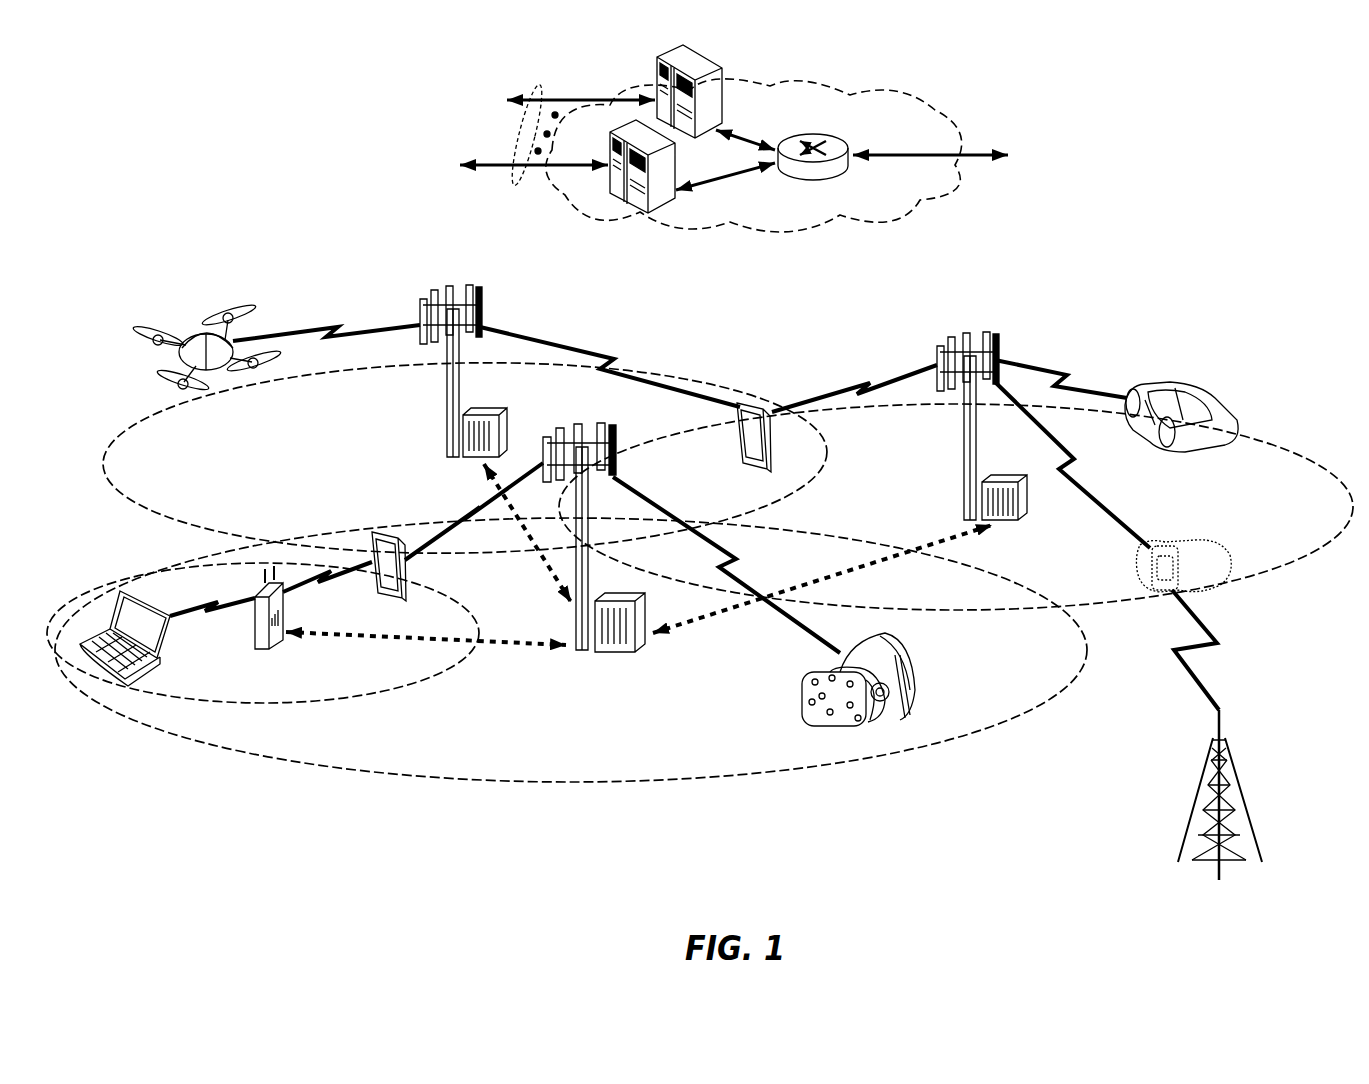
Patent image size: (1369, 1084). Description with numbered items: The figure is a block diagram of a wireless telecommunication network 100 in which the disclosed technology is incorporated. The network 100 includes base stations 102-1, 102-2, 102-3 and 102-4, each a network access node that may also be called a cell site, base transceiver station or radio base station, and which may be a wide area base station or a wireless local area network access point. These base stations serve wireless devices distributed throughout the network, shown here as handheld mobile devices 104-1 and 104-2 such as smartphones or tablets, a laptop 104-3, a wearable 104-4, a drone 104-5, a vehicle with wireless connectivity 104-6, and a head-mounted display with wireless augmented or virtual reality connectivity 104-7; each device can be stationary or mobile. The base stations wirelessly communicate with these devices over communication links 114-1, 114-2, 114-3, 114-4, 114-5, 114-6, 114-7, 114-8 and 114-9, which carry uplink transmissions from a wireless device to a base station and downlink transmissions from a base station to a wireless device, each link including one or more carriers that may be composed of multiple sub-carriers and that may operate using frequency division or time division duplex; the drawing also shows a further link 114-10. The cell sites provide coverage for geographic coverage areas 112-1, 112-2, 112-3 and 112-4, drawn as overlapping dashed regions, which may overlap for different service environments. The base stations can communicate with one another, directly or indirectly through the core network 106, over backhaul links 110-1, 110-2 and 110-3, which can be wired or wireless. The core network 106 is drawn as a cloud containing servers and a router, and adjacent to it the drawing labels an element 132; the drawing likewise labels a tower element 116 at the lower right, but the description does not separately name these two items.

The wireless telecommunication network 100 is at (1252, 146).
The core network 106 is at (845, 222).
The antenna / external link 132 is at (515, 180).
The base station 102-1 is at (578, 652).
The base station 102-2 is at (445, 405).
The base station 102-3 is at (962, 438).
The base station 102-4 is at (255, 640).
The handheld mobile device 104-1 is at (407, 578).
The handheld mobile device 104-2 is at (738, 440).
The laptop 104-3 is at (100, 672).
The wearable 104-4 is at (1163, 538).
The drone 104-5 is at (214, 372).
The vehicle with wireless connectivity 104-6 is at (1205, 392).
The head-mounted display 104-7 is at (915, 668).
The backhaul link 110-1 is at (325, 640).
The backhaul link 110-2 is at (883, 568).
The backhaul link 110-3 is at (545, 570).
The geographic coverage area 112-1 is at (508, 781).
The geographic coverage area 112-2 is at (388, 695).
The geographic coverage area 112-3 is at (165, 506).
The geographic coverage area 112-4 is at (1265, 440).
The communication link 114-1 is at (745, 565).
The communication link 114-2 is at (465, 513).
The communication link 114-3 is at (183, 612).
The communication link 114-4 is at (325, 582).
The communication link 114-5 is at (338, 326).
The communication link 114-6 is at (611, 363).
The communication link 114-7 is at (858, 385).
The communication link 114-8 is at (1085, 486).
The communication link 114-9 is at (1063, 377).
The communication link 114-10 is at (1210, 645).
The radio tower 116 is at (1233, 778).